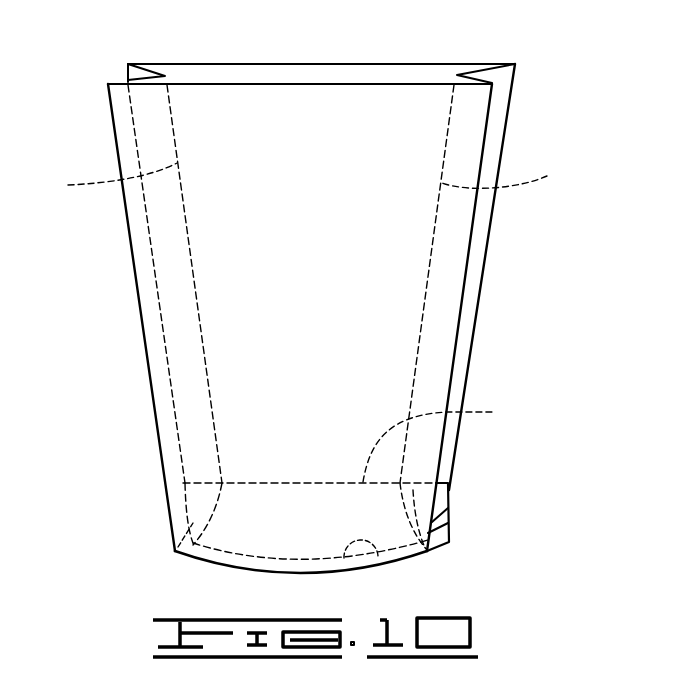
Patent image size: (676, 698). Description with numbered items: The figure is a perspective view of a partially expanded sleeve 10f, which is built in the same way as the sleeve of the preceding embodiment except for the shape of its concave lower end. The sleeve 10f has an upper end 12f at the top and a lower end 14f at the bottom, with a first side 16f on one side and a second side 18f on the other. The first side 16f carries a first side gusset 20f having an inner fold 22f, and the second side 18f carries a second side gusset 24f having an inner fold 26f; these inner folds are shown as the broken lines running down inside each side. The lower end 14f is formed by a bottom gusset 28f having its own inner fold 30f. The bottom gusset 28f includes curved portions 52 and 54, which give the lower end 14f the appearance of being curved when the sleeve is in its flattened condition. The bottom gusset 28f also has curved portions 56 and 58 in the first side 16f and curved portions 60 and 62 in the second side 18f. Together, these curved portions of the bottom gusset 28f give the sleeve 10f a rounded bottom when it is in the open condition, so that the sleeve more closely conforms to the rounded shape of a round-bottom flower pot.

The sleeve 10f is at (532, 321).
The upper end 12f is at (215, 63).
The lower end 14f is at (195, 558).
The first side 16f is at (137, 297).
The second side 18f is at (490, 252).
The first side gusset 20f is at (126, 73).
The inner fold 22f is at (100, 180).
The second side gusset 24f is at (498, 105).
The inner fold 26f is at (516, 177).
The bottom gusset 28f is at (452, 497).
The inner fold 30f is at (451, 442).
The curved portion 52 is at (257, 573).
The curved portion 54 is at (388, 562).
The curved portion 56 is at (182, 505).
The curved portion 58 is at (187, 521).
The curved portion 60 is at (453, 512).
The curved portion 62 is at (452, 525).